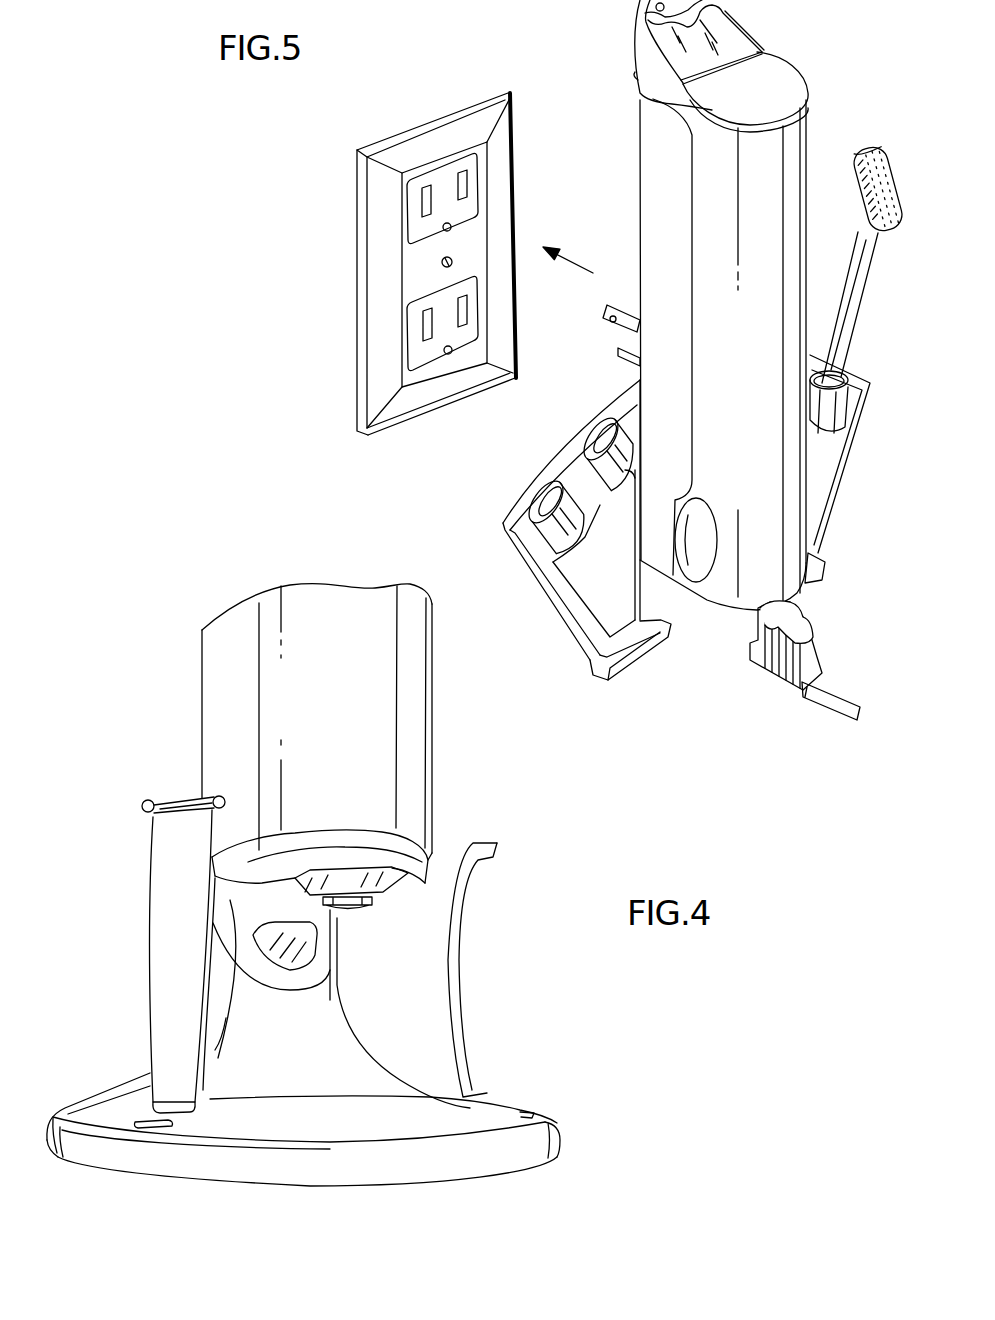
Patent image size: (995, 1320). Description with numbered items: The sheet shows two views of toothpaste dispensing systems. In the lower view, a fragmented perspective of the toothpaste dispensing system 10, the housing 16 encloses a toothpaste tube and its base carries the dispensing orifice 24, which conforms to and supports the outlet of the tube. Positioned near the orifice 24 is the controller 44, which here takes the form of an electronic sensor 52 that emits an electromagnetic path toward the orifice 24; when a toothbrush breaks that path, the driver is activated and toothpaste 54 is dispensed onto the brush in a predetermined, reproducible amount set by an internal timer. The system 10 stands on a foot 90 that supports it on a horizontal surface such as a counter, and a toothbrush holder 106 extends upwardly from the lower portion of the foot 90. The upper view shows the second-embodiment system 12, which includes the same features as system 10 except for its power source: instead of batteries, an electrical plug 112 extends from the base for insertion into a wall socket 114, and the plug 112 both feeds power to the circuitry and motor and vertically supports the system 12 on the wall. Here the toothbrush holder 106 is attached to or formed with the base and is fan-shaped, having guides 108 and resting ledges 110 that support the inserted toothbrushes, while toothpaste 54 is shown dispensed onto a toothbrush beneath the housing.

In FIG. 4, the toothpaste dispensing system 10 is at (115, 732).
In FIG. 5, the system 12 is at (852, 66).
In FIG. 4, the housing 16 is at (192, 650).
In FIG. 4, the dispensing orifice 24 is at (380, 905).
In FIG. 4, the controller 44 is at (317, 935).
In FIG. 4, the electronic sensor 52 is at (302, 957).
In FIG. 5, the toothpaste 54 is at (804, 612).
In FIG. 4, the foot 90 is at (537, 1137).
In FIG. 5, the toothbrush holder 106 is at (508, 540).
In FIG. 4, the toothbrush holder 106 is at (167, 923).
In FIG. 5, the guides 108 is at (601, 442).
In FIG. 5, the resting ledges 110 is at (610, 674).
In FIG. 5, the electrical plug 112 is at (617, 302).
In FIG. 5, the wall socket 114 is at (377, 256).